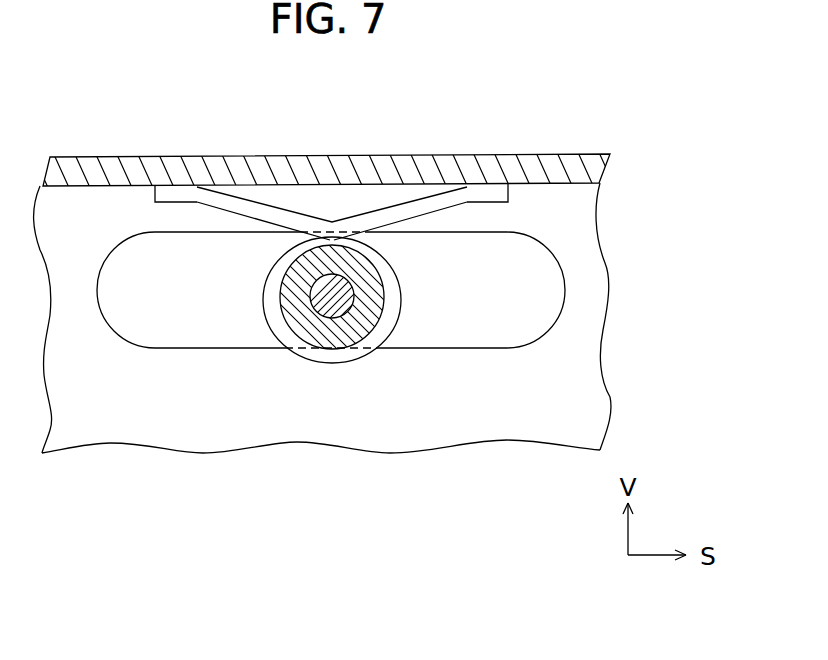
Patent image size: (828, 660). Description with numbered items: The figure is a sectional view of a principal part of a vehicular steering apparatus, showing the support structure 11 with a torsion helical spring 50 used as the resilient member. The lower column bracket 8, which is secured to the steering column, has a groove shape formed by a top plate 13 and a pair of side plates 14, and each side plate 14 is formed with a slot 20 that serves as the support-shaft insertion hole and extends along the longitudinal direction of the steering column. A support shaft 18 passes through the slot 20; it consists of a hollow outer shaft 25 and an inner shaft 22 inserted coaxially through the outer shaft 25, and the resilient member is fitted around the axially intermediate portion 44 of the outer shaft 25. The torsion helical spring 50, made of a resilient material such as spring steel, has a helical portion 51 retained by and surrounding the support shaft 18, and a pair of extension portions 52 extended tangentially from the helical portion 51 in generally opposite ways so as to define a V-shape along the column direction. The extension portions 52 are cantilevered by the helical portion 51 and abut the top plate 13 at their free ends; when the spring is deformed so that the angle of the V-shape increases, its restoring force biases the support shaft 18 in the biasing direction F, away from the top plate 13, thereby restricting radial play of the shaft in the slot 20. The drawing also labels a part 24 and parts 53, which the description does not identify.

The lower column bracket 8 is at (596, 227).
The support structure 11 is at (605, 143).
The top plate 13 is at (565, 162).
The side plates 14 is at (592, 305).
The support shaft 18 is at (275, 497).
The slot 20 is at (465, 348).
The inner shaft 22 is at (332, 303).
The insulating layer 24 is at (323, 318).
The outer shaft 25 is at (351, 328).
The axially intermediate portion 44 is at (302, 320).
The torsion helical spring 50 is at (259, 306).
The helical portion 51 is at (268, 270).
The extension portions 52 is at (259, 209).
The fixing portion 53 is at (172, 195).
The biasing direction F is at (332, 241).